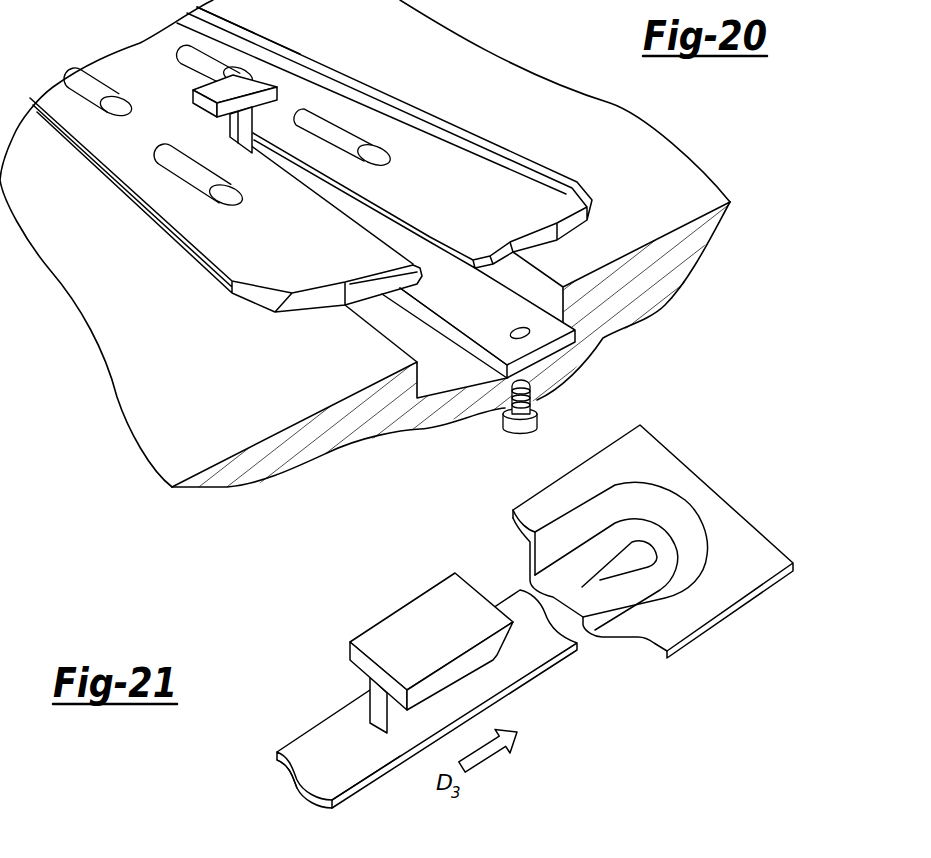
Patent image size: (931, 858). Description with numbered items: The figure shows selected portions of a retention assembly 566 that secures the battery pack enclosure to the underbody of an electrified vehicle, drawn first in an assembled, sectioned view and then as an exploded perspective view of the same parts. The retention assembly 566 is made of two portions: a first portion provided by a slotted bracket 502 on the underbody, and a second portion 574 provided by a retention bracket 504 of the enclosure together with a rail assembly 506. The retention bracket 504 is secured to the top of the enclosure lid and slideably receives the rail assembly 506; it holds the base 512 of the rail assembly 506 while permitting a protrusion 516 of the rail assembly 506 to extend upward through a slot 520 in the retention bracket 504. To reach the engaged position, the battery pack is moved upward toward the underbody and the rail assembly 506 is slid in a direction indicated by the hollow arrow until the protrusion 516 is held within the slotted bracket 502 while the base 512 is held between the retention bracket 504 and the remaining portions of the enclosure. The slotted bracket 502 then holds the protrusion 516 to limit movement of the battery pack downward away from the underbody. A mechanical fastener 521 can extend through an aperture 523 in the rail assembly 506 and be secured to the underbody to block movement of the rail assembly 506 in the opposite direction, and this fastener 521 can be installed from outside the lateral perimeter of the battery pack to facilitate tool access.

In FIG. 21, the slotted bracket 502 is at (727, 583).
In FIG. 20, the retention bracket 504 is at (527, 197).
In FIG. 20, the rail assembly 506 is at (463, 312).
In FIG. 21, the rail assembly 506 is at (333, 782).
In FIG. 20, the base 512 is at (483, 300).
In FIG. 21, the base 512 is at (332, 740).
In FIG. 20, the protrusion 516 is at (257, 82).
In FIG. 21, the protrusion 516 is at (398, 627).
In FIG. 20, the slot 520 is at (376, 216).
In FIG. 20, the mechanical fastener 521 is at (520, 414).
In FIG. 20, the aperture 523 is at (531, 331).
In FIG. 21, the retention assembly 566 is at (663, 516).
In FIG. 20, the second portion 574 is at (488, 132).
In FIG. 21, the second portion 574 is at (278, 806).